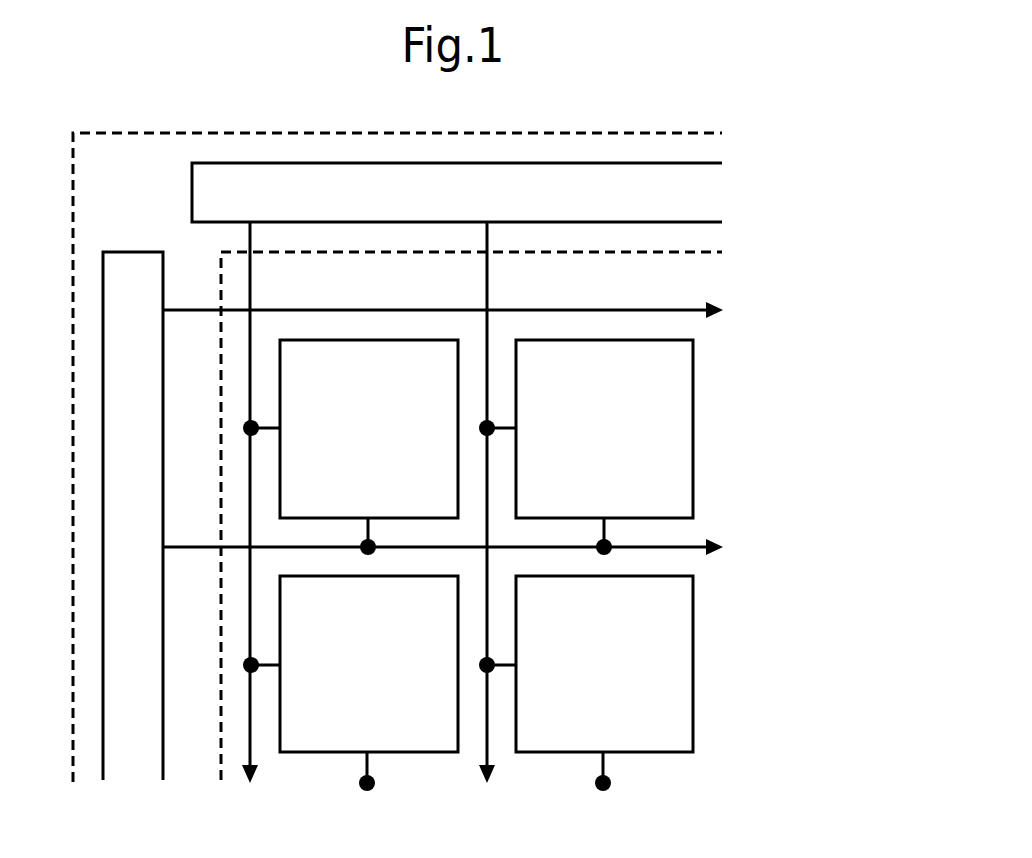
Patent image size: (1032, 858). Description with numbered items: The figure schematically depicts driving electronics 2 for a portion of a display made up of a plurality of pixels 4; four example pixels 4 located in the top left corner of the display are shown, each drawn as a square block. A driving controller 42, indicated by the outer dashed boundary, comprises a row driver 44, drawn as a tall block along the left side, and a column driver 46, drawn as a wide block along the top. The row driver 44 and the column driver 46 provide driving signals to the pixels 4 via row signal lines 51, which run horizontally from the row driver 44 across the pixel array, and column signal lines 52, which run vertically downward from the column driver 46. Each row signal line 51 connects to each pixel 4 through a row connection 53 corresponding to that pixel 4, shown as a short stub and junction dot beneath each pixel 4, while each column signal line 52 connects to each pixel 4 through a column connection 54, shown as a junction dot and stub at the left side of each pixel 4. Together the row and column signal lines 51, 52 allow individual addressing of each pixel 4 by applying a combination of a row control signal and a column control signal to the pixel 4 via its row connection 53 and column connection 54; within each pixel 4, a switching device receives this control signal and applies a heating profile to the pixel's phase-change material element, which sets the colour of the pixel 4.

The driving electronics 2 is at (823, 156).
The pixel 4 is at (486, 546).
The driving controller 42 is at (157, 133).
The row driver 44 is at (133, 516).
The column driver 46 is at (457, 192).
The row signal line 51 is at (193, 310).
The column signal line 52 is at (250, 236).
The row connection 53 is at (370, 556).
The column connection 54 is at (243, 428).